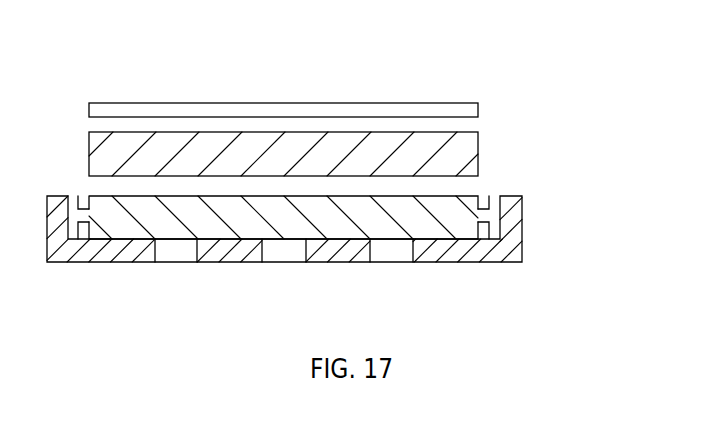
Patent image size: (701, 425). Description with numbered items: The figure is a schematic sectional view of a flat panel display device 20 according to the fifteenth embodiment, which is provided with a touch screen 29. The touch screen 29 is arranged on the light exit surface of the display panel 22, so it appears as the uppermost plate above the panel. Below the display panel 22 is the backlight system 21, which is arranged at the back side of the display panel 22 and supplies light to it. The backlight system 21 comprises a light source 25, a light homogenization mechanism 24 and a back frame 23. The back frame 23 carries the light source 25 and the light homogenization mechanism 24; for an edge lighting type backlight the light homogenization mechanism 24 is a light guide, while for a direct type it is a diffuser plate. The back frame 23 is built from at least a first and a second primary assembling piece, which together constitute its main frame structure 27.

The flat panel display device 20 is at (290, 31).
The backlight system 21 is at (552, 148).
The display panel 22 is at (470, 142).
The back frame 23 is at (468, 270).
The light homogenization mechanism 24 is at (467, 205).
The light source 25 is at (490, 203).
The main frame structure 27 is at (322, 255).
The touch screen 29 is at (470, 103).